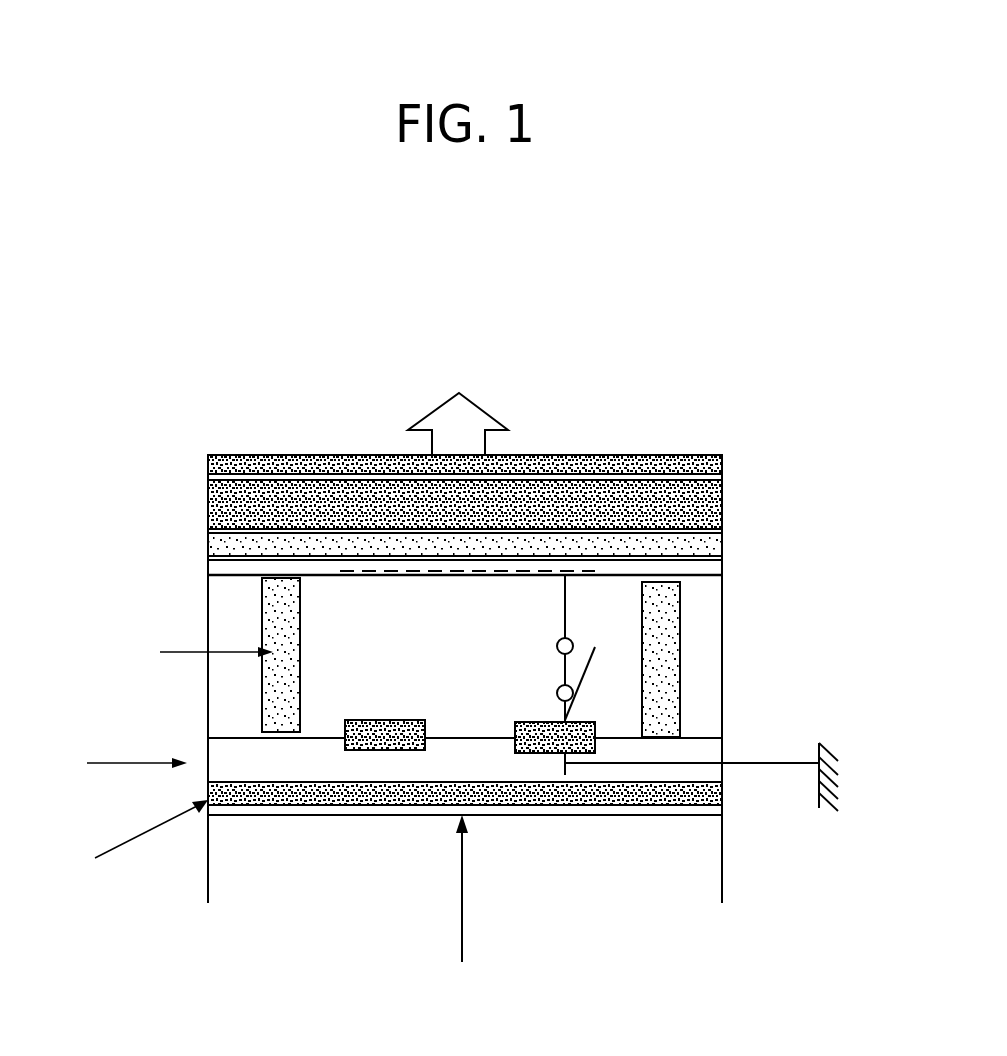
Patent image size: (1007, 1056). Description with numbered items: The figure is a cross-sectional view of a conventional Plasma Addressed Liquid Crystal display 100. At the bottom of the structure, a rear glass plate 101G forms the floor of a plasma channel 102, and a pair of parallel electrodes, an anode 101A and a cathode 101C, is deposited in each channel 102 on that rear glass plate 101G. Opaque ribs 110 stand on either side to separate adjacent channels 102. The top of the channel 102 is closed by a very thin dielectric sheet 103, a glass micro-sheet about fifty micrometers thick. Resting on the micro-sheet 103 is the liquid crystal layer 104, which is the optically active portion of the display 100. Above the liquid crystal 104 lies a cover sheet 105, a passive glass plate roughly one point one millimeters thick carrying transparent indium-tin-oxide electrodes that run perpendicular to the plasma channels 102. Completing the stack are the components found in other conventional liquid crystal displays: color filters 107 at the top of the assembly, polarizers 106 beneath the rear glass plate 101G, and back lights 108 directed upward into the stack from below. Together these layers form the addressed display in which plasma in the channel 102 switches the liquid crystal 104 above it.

The display 100 is at (186, 380).
The color filters 107 is at (208, 456).
The cover sheet 105 is at (722, 503).
The liquid crystal layer 104 is at (208, 538).
The dielectric sheet 103 is at (710, 572).
The channel 102 is at (375, 665).
The opaque ribs 110 is at (273, 683).
The rear glass plate 101G is at (208, 747).
The cathode 101C is at (390, 750).
The anode 101A is at (528, 755).
The polarizers 106 is at (208, 790).
The back lights 108 is at (462, 906).